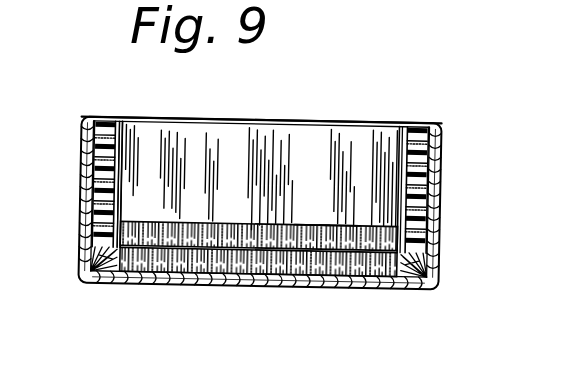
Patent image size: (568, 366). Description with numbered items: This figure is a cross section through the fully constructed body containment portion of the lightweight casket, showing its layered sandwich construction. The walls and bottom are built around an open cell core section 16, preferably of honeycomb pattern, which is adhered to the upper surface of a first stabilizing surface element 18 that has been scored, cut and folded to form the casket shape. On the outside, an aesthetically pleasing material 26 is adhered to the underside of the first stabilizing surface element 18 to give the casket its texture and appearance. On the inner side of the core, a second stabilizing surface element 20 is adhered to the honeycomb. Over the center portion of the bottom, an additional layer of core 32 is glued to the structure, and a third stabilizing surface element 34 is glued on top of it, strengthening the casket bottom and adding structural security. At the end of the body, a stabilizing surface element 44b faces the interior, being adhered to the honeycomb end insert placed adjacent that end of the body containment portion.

The open cell core section 16 is at (249, 262).
The first stabilizing surface element 18 is at (86, 208).
The second stabilizing surface element 20 is at (126, 160).
The aesthetically pleasing material 26 is at (440, 208).
The additional layer of core 32 is at (327, 227).
The third stabilizing surface element 34 is at (312, 225).
The stabilizing surface element 44b is at (212, 157).